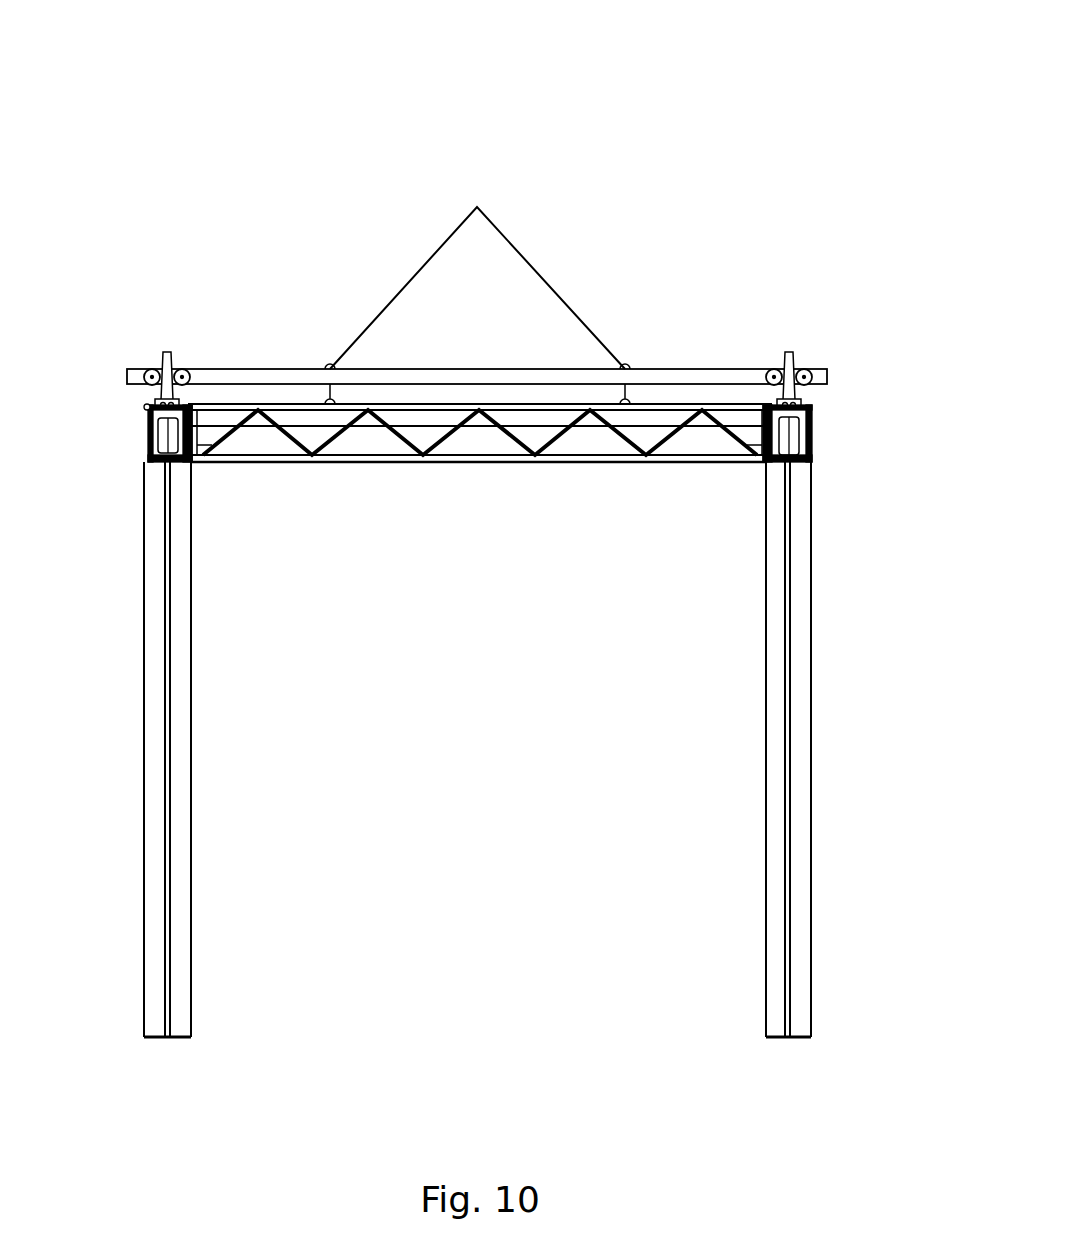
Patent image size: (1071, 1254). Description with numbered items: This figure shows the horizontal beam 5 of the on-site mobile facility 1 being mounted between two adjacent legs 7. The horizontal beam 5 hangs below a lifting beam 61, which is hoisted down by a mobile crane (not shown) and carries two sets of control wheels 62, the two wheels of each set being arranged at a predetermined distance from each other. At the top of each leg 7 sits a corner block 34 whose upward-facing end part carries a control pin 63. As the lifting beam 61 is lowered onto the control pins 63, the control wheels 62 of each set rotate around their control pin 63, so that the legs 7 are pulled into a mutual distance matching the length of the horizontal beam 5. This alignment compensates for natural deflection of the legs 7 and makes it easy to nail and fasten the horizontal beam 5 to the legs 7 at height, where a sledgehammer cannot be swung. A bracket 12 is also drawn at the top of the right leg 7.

The on-site mobile facility 1 is at (620, 119).
The horizontal beam 5 is at (520, 462).
The leg 7 is at (152, 780).
The bracket / connecting element 12 is at (807, 447).
The corner block 34 is at (155, 412).
The lifting beam 61 is at (672, 377).
The control wheel 62 is at (155, 371).
The control pin 63 is at (168, 395).